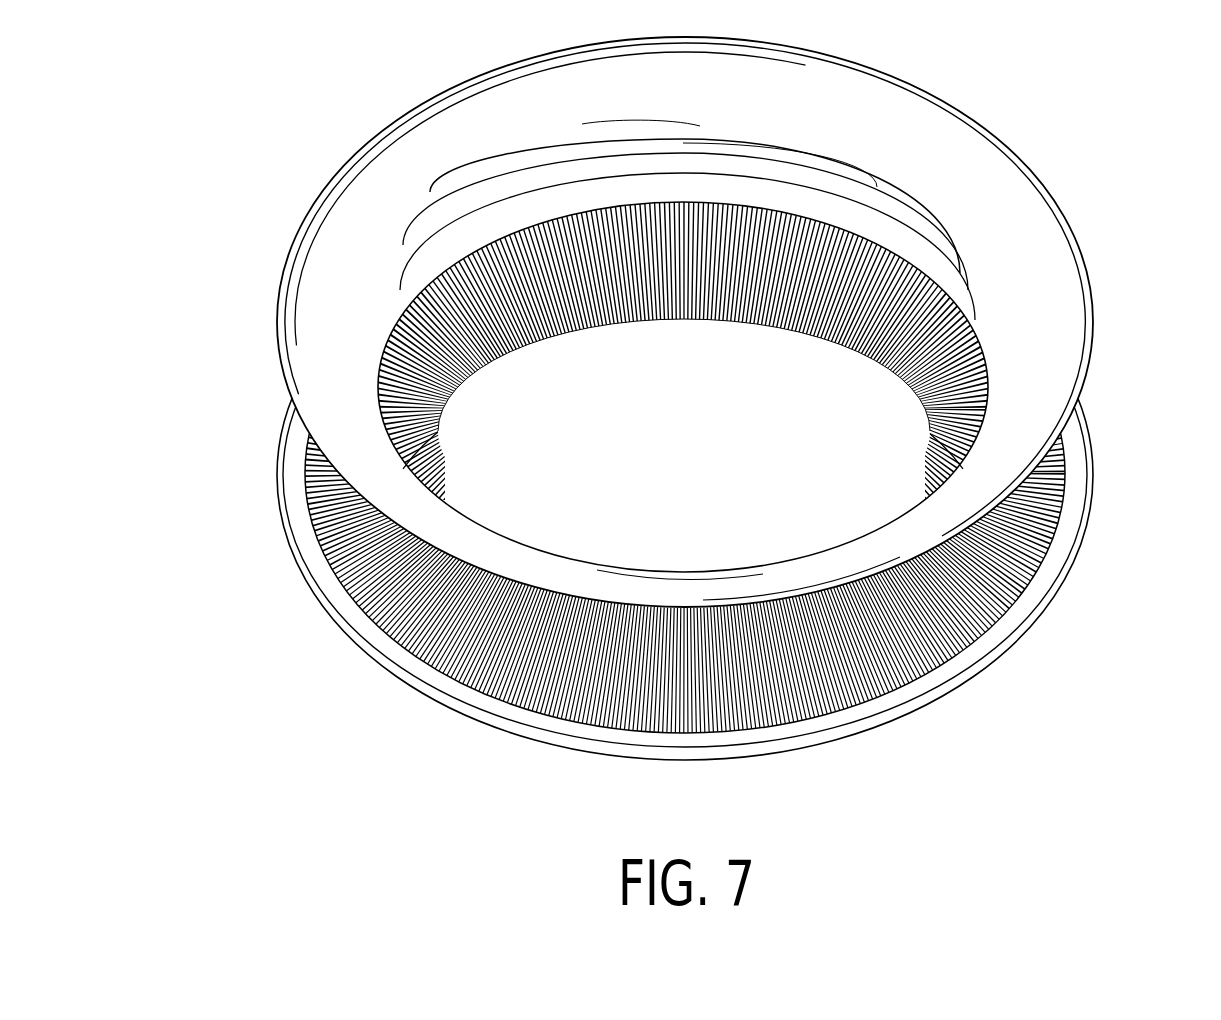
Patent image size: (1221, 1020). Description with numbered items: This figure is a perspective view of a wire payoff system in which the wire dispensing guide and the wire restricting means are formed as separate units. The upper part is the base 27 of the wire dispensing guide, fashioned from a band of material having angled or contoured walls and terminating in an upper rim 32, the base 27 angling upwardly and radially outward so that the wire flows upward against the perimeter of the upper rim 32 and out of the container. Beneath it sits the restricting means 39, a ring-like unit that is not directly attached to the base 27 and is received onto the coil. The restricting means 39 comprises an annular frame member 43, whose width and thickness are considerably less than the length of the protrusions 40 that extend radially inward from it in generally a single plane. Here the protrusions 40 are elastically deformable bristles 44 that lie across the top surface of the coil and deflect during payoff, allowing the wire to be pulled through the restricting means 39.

The base 27 is at (972, 136).
The upper rim 32 is at (1047, 187).
The restricting means 39 is at (333, 662).
The protrusions 40 is at (828, 408).
The annular frame member 43 is at (1058, 550).
The bristles 44 is at (727, 337).